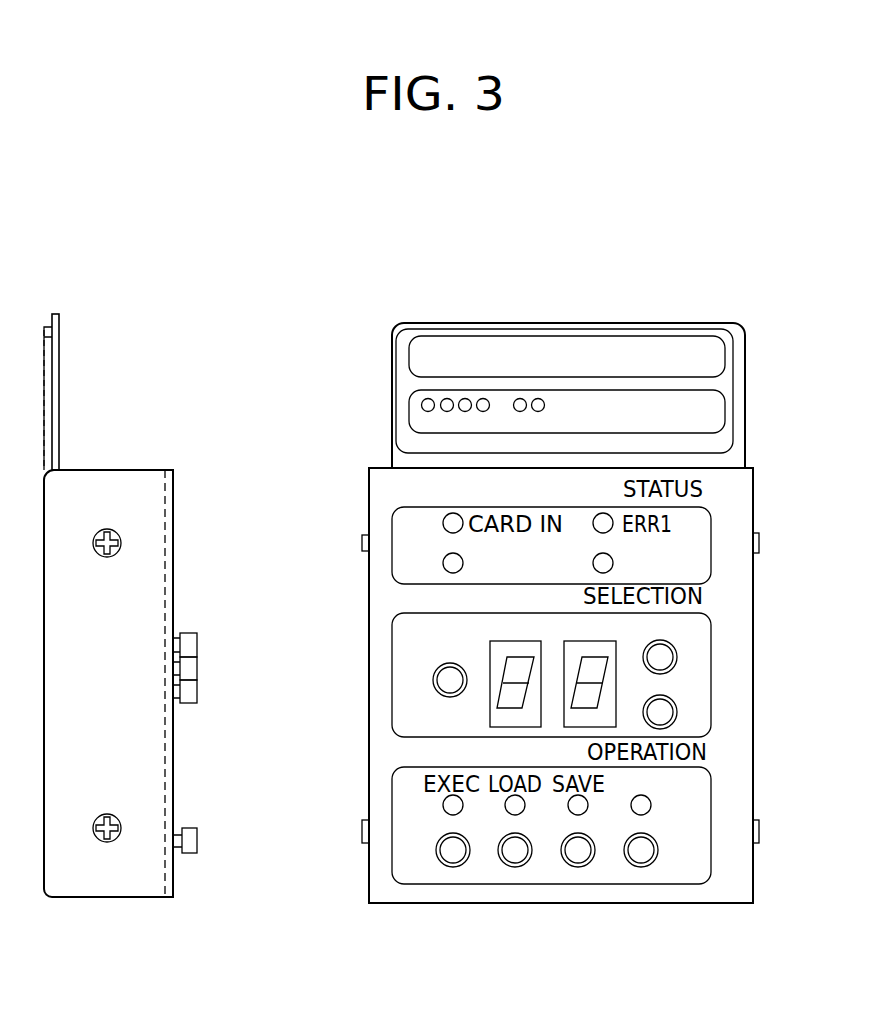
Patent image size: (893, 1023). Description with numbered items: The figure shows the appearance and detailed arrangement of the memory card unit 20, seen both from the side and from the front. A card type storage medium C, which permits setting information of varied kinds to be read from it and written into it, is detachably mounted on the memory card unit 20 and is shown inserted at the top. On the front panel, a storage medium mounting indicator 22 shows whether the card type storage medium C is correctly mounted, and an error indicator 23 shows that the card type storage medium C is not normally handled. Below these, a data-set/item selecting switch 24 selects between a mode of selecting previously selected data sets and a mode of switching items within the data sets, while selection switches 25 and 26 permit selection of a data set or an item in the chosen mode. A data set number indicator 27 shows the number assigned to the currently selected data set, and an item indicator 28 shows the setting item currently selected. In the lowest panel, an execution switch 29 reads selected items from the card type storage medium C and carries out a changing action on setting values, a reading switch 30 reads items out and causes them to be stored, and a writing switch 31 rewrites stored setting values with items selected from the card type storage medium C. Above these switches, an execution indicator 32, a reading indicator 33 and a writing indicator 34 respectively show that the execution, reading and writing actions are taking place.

The memory card unit 20 is at (367, 868).
The storage medium mounting indicator 22 is at (443, 519).
The error indicator 23 is at (610, 532).
The data-set/item selecting switch 24 is at (433, 670).
The selection switch 25 is at (677, 652).
The selection switch 26 is at (680, 707).
The data set number indicator 27 is at (490, 708).
The item indicator 28 is at (680, 723).
The execution switch 29 is at (450, 868).
The reading switch 30 is at (522, 867).
The writing switch 31 is at (590, 860).
The execution indicator 32 is at (447, 813).
The reading indicator 33 is at (507, 813).
The writing indicator 34 is at (568, 813).
The card type storage medium C is at (555, 325).